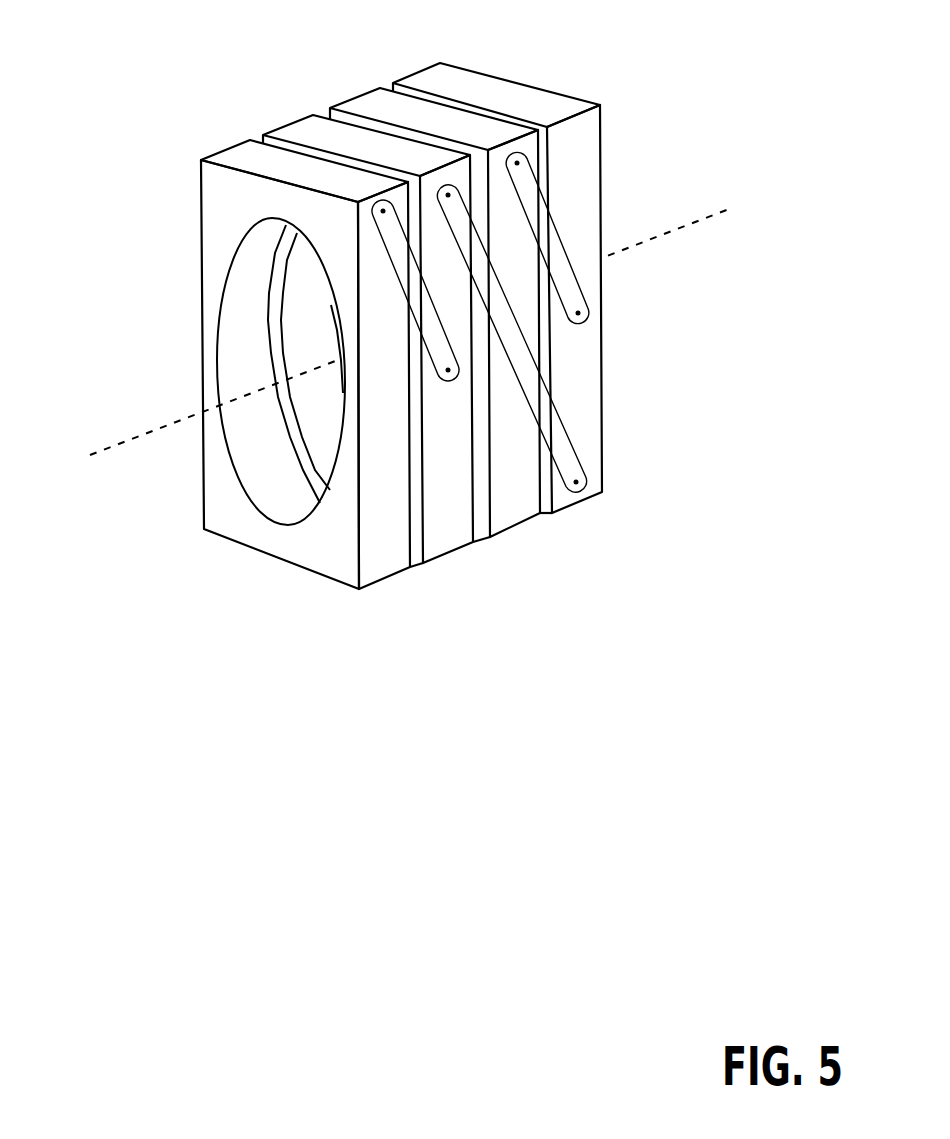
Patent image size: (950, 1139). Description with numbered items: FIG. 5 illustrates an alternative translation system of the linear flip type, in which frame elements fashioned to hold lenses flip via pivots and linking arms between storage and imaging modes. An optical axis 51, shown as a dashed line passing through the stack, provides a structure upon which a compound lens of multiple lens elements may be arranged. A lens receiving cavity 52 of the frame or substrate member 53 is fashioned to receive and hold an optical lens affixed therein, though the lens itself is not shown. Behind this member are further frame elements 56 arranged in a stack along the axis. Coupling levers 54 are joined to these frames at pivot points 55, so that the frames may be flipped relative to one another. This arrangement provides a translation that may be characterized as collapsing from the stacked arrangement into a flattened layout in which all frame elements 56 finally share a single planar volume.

The optical axis 51 is at (195, 412).
The lens receiving cavity 52 is at (246, 438).
The frame or substrate member 53 is at (332, 563).
The coupling lever 54 is at (537, 392).
The pivot point 55 is at (448, 195).
The frame element 56 is at (437, 65).